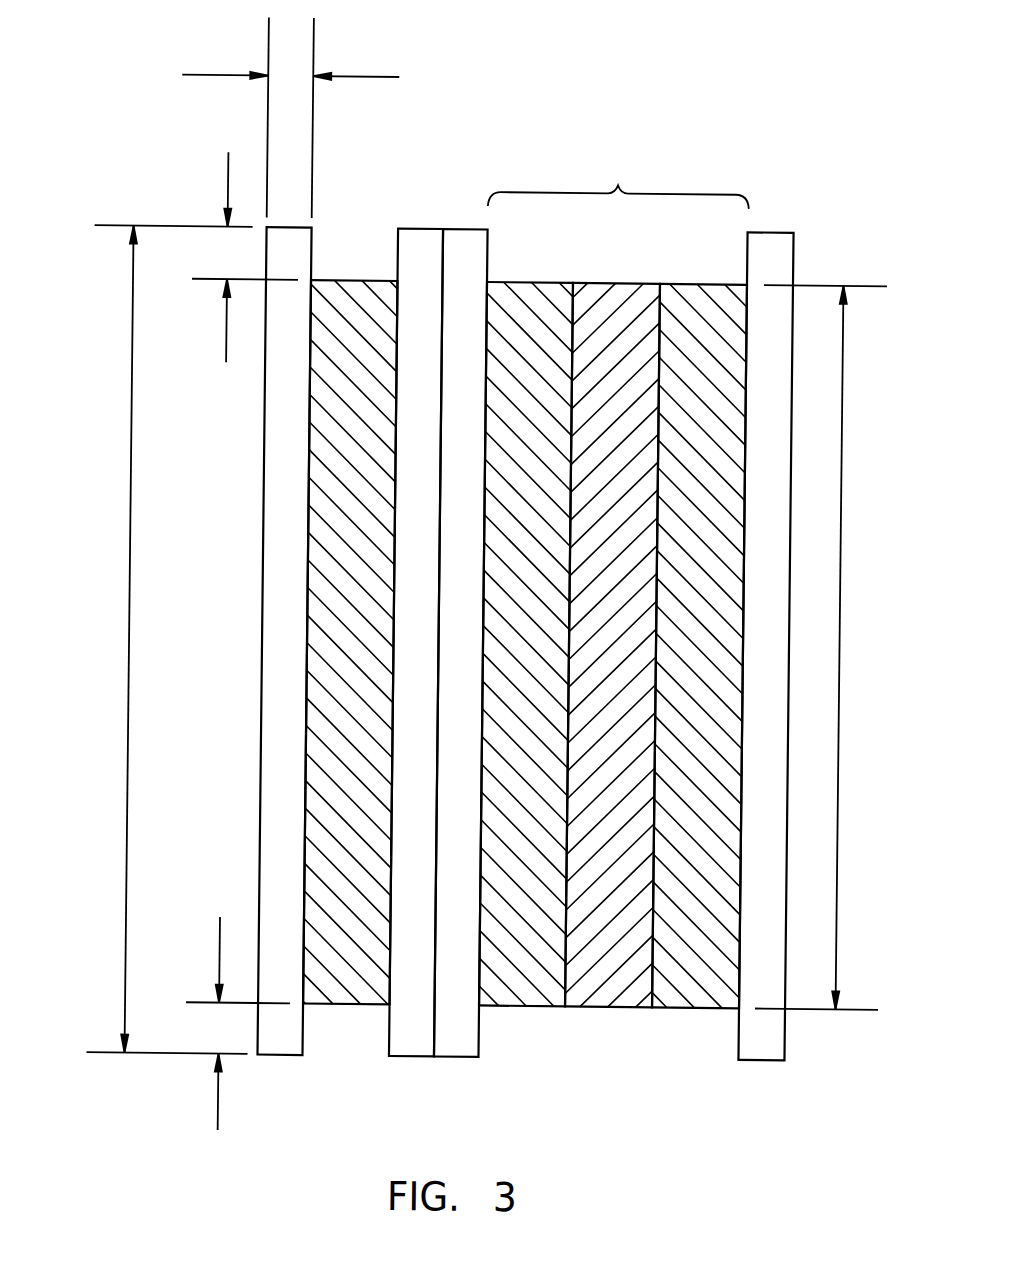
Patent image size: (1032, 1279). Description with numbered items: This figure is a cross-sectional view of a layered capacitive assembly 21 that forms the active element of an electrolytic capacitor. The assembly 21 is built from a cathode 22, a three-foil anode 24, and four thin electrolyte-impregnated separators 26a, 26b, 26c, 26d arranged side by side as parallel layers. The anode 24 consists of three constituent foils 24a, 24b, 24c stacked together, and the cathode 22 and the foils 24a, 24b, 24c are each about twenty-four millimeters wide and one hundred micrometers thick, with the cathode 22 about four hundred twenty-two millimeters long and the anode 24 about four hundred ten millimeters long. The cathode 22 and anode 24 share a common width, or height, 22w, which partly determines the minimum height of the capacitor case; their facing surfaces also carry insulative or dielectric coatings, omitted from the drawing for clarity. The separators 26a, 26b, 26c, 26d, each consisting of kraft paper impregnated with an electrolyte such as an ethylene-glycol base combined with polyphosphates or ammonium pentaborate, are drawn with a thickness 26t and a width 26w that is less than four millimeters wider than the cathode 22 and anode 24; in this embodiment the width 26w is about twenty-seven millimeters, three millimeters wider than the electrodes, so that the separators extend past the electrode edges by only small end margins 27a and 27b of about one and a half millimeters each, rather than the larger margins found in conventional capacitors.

The layered capacitive assembly 21 is at (783, 99).
The cathode 22 is at (350, 282).
The width 22w is at (843, 646).
The three-foil anode 24 is at (617, 182).
The constituent foil 24a is at (532, 282).
The constituent foil 24b is at (618, 282).
The constituent foil 24c is at (705, 282).
The electrolyte-impregnated separator 26a is at (289, 1057).
The electrolyte-impregnated separator 26b is at (418, 1058).
The electrolyte-impregnated separator 26c is at (464, 1058).
The electrolyte-impregnated separator 26d is at (770, 1059).
The lead thickness 26t is at (368, 78).
The separator width 26w is at (133, 639).
The end margin 27a is at (227, 1106).
The end margin 27b is at (227, 177).